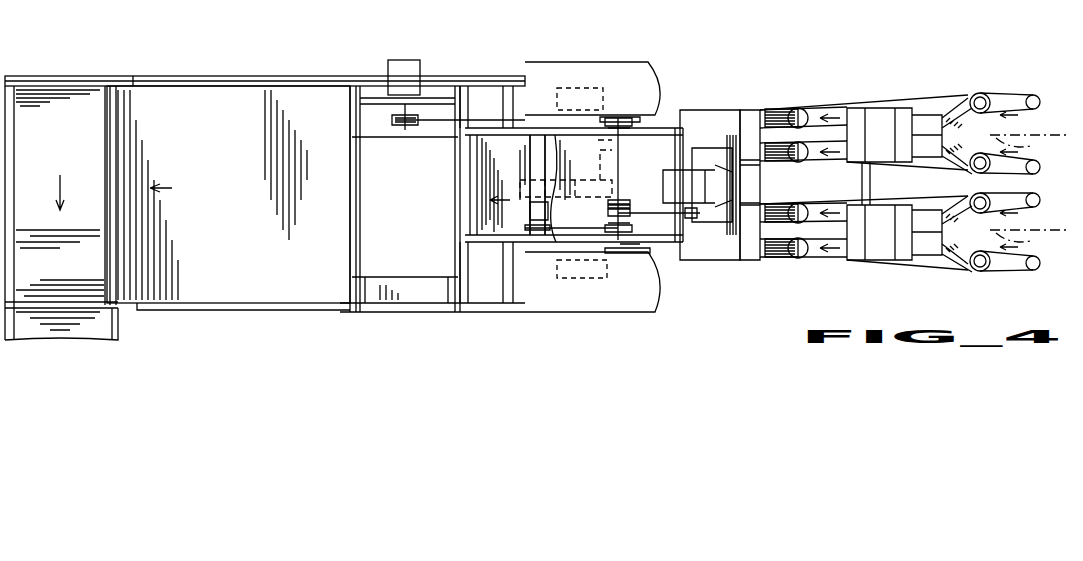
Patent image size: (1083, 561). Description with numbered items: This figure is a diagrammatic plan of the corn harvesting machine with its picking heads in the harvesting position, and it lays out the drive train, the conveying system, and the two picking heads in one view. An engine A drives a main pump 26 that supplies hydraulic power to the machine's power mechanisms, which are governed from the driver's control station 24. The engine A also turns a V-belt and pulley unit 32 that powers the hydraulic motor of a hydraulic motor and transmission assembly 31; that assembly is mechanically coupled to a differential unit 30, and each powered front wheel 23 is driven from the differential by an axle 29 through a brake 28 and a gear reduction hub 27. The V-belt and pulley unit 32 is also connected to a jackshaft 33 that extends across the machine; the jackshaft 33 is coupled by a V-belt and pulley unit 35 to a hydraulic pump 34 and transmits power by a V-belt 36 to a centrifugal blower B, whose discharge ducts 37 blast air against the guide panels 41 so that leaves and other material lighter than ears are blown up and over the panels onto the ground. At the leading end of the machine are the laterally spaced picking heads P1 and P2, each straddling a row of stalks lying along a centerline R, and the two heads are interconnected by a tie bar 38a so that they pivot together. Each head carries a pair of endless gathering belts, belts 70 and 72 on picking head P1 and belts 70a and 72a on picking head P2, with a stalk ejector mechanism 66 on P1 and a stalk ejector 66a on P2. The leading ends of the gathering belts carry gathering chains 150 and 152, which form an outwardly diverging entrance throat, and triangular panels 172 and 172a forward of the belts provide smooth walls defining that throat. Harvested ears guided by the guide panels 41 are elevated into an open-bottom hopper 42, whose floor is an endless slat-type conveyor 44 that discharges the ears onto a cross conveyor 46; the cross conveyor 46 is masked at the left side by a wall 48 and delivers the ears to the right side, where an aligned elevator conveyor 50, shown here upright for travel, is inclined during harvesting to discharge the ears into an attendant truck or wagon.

The powered front wheels 23 is at (575, 318).
The control station 24 is at (560, 140).
The main pump 26 is at (402, 64).
The gear reduction hub 27 is at (563, 86).
The brake 28 is at (600, 126).
The axle 29 is at (630, 144).
The differential unit 30 is at (630, 160).
The hydraulic motor and transmission assembly 31 is at (522, 182).
The V-belt and pulley unit 32 is at (445, 126).
The jackshaft 33 is at (632, 176).
The hydraulic pump 34 is at (530, 211).
The V-belt and pulley unit 35 is at (560, 238).
The V-belt 36 is at (640, 214).
The discharge ducts 37 is at (708, 132).
The tie bar 38a is at (872, 184).
The guide panels 41 is at (738, 112).
The hopper 42 is at (220, 308).
The slat-type conveyor 44 is at (202, 168).
The cross conveyor 46 is at (62, 162).
The wall 48 is at (47, 78).
The elevator conveyor 50 is at (116, 328).
The stalk ejector mechanism 66 is at (873, 246).
The stalk ejector 66a is at (892, 102).
The gathering belt 70 is at (786, 262).
The gathering belt 70a is at (787, 170).
The gathering belt 72 is at (806, 196).
The gathering belt 72a is at (818, 104).
The gathering chain 150 is at (1010, 278).
The gathering chain 152 is at (1012, 204).
The triangular panel 172 is at (988, 239).
The triangular panel 172a is at (972, 110).
The engine A is at (412, 208).
The centrifugal blower B is at (692, 196).
The picking head P1 is at (909, 276).
The picking head P2 is at (924, 86).
The centerlines R is at (1029, 195).